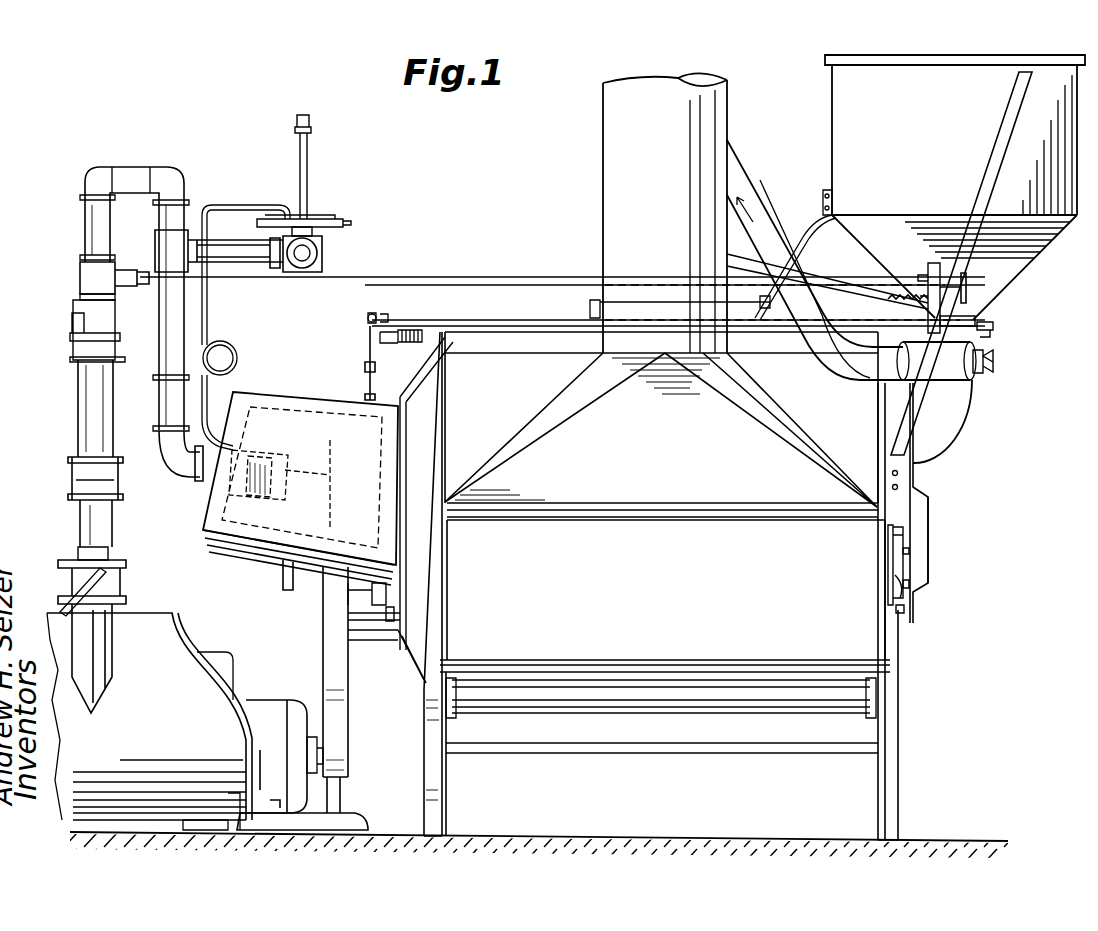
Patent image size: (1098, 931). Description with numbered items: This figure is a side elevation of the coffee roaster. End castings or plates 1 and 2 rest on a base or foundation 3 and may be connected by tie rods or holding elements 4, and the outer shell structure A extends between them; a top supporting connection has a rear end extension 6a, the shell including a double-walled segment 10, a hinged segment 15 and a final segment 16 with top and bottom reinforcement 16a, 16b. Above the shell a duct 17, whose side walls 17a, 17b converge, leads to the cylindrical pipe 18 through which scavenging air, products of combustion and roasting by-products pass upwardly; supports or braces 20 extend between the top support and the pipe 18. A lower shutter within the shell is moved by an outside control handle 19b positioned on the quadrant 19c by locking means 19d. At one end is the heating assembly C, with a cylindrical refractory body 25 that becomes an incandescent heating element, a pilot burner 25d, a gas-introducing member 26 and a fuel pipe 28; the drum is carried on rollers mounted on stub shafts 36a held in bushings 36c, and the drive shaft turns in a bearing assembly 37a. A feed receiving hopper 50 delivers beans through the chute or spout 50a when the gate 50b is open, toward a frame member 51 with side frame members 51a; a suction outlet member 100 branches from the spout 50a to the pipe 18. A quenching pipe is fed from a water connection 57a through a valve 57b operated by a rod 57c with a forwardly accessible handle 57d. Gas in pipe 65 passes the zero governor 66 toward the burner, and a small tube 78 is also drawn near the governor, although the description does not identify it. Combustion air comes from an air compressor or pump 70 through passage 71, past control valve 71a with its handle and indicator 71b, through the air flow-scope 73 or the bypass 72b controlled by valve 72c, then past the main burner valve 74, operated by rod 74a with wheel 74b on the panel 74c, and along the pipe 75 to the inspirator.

The end casting or plate 1 is at (423, 752).
The end casting or plate 2 is at (899, 786).
The base or foundation 3 is at (630, 836).
The tie rods or holding elements 4 is at (575, 752).
The rear end extension 6a is at (412, 330).
The shell segment 10 is at (455, 351).
The hinged shell segment 15 is at (668, 717).
The final shell segment 16 is at (538, 640).
The top reinforcement 16a is at (532, 518).
The bottom reinforcement 16b is at (602, 666).
The duct 17 is at (666, 456).
The duct side wall 17a is at (547, 413).
The duct side wall 17b is at (763, 411).
The cylindrical pipe 18 is at (603, 215).
The outside control handle 19b is at (913, 585).
The quadrant 19c is at (903, 535).
The locking means 19d is at (909, 550).
The supports or braces 20 is at (590, 302).
The refractory cylindrical body 25 is at (302, 477).
The pilot burner 25d is at (292, 575).
The gas-introducing member 26 is at (251, 543).
The fuel pipe 28 is at (160, 393).
The stub shaft 36a is at (370, 595).
The bushing 36c is at (377, 616).
The bearing assembly 37a is at (373, 640).
The feed receiving hopper 50 is at (836, 117).
The chute or spout 50a is at (972, 407).
The gate 50b is at (993, 324).
The frame member 51 is at (938, 504).
The side frame member 51a is at (920, 522).
The water connection or pipe 57a is at (370, 348).
The valve 57b is at (365, 304).
The rod 57c is at (468, 318).
The handle 57d is at (987, 350).
The gas pipe 65 is at (317, 254).
The zero governor 66 is at (323, 222).
The air compressor or pump 70 is at (172, 635).
The air passage 71 is at (107, 645).
The control valve 71a is at (77, 558).
The control handle and indicator 71b is at (115, 580).
The bypass 72b is at (87, 424).
The bypass valve 72c is at (73, 345).
The air flow-scope 73 is at (78, 395).
The main burner valve 74 is at (80, 274).
The rod 74a is at (540, 270).
The wheel or handle 74b is at (967, 282).
The panel 74c is at (925, 270).
The pipe 75 is at (137, 172).
The tube 78 is at (243, 202).
The suction outlet member 100 is at (770, 213).
The outer shell structure A is at (666, 590).
The heating assembly C is at (268, 381).